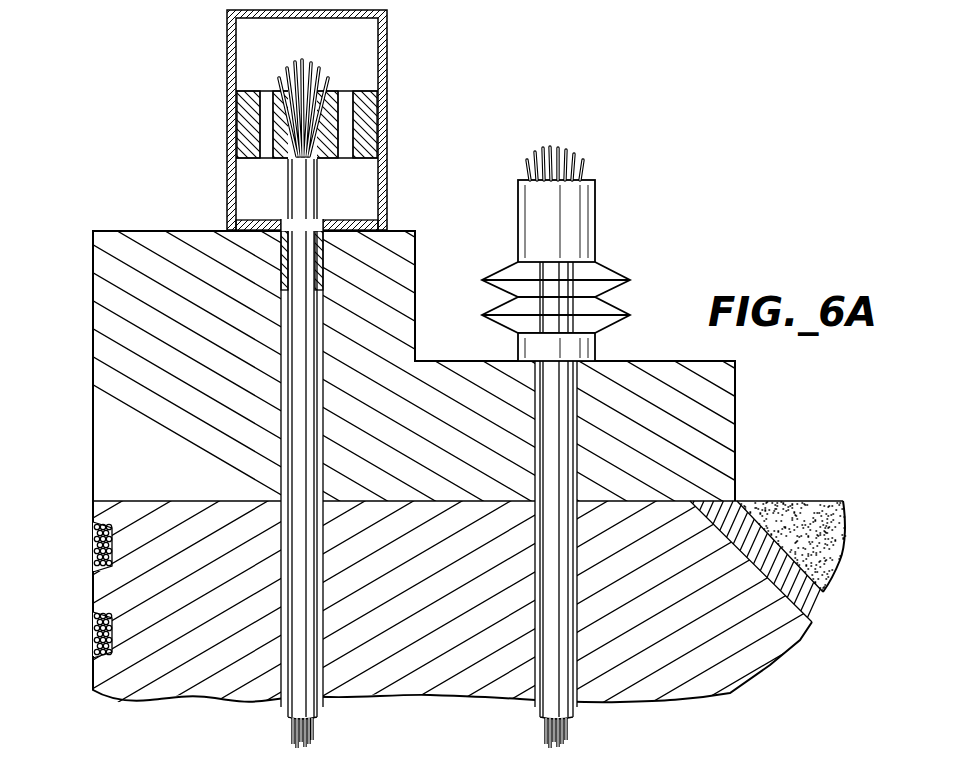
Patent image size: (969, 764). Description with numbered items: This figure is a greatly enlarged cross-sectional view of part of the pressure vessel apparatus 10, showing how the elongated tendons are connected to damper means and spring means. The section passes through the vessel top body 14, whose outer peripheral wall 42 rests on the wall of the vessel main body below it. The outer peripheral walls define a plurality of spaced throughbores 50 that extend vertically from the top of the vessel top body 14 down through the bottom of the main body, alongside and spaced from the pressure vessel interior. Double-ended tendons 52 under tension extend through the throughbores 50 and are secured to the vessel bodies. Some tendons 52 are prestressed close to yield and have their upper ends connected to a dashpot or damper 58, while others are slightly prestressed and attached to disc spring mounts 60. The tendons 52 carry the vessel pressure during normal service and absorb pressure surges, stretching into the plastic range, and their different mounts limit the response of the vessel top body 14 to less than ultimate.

The pressure vessel apparatus 10 is at (444, 382).
The vessel top body 14 is at (93, 455).
The outer peripheral wall 42 is at (93, 591).
The throughbores 50 is at (320, 430).
The tendons 52 is at (322, 712).
The damper 58 is at (388, 113).
The disc spring mounts 60 is at (607, 270).